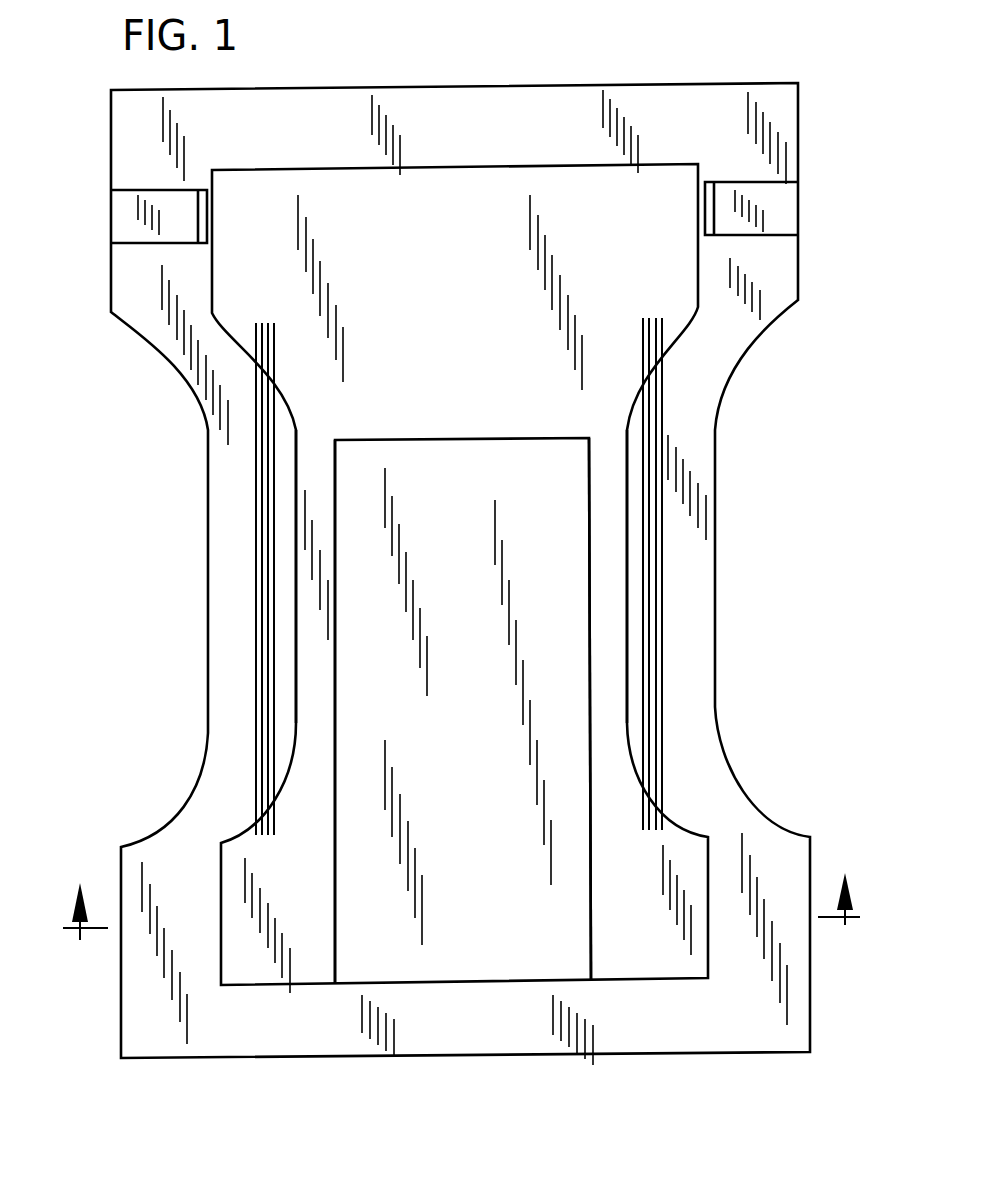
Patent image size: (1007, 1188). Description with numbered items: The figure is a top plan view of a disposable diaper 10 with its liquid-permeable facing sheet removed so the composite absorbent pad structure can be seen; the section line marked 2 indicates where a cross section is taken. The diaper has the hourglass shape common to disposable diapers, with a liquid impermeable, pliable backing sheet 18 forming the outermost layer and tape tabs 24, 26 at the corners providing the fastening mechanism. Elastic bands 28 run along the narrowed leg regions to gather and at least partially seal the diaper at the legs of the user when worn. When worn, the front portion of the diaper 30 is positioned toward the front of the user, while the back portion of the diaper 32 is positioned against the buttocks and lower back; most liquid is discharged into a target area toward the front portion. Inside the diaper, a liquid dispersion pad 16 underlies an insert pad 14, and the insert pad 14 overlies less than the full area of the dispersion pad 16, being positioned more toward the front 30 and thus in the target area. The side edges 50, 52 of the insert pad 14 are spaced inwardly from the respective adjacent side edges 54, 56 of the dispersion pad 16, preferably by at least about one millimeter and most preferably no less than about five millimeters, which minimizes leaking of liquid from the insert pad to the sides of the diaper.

The disposable diaper 10 is at (470, 622).
The insert pad 14 is at (565, 893).
The dispersion pad 16 is at (667, 962).
The backing sheet 18 is at (810, 1008).
The tape tab 24 is at (782, 207).
The tape tab 26 is at (127, 228).
The elastic bands 28 is at (663, 523).
The front portion of the diaper 30 is at (438, 1013).
The back portion of the diaper 32 is at (453, 181).
The side edge of the insert pad 50 is at (591, 738).
The side edge of the insert pad 52 is at (335, 750).
The side edge of the dispersion pad 54 is at (628, 635).
The side edge of the dispersion pad 56 is at (293, 625).
The section line 2- 2 is at (464, 917).